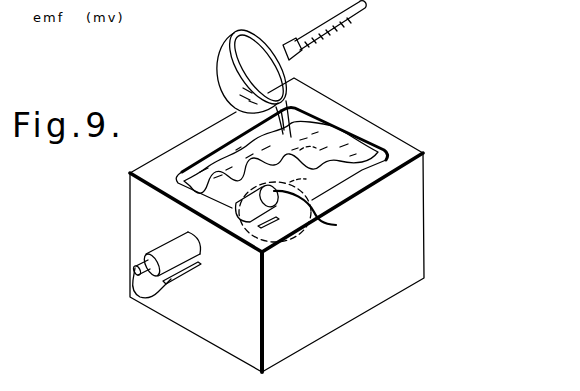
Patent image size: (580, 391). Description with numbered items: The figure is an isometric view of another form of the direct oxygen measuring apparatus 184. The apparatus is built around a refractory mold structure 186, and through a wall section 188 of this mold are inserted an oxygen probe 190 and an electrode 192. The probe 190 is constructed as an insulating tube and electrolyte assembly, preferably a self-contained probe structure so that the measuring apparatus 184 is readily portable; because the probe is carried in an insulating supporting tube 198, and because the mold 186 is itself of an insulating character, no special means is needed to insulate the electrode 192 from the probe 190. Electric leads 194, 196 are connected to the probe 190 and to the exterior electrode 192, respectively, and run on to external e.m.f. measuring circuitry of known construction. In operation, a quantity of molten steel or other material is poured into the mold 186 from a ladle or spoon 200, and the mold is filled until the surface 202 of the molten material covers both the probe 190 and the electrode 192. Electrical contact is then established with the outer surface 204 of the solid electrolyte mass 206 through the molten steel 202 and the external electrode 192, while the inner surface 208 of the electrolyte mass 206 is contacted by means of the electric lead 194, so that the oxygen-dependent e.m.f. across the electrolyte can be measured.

The direct oxygen measuring apparatus 184 is at (388, 125).
The refractory mold structure 186 is at (370, 300).
The wall section 188 is at (150, 212).
The oxygen probe 190 is at (163, 245).
The electrode 192 is at (189, 277).
The electric lead 194 is at (137, 279).
The electric lead 196 is at (143, 297).
The insulating supporting tube 198 is at (201, 246).
The ladle 200 is at (228, 75).
The surface of the molten material 202 is at (322, 133).
The outer surface of the solid electrolyte mass 204 is at (323, 214).
The solid electrolyte mass 206 is at (310, 231).
The inner surface of the electrolyte mass 208 is at (273, 252).